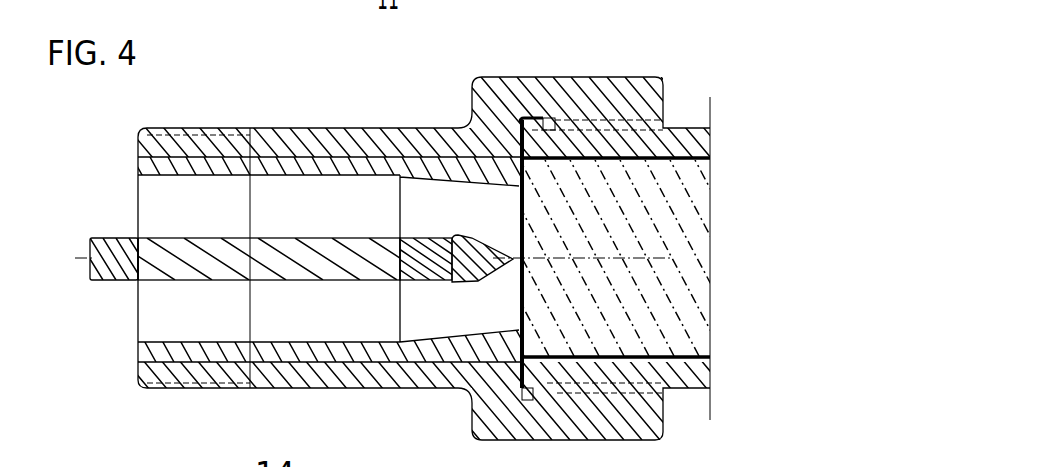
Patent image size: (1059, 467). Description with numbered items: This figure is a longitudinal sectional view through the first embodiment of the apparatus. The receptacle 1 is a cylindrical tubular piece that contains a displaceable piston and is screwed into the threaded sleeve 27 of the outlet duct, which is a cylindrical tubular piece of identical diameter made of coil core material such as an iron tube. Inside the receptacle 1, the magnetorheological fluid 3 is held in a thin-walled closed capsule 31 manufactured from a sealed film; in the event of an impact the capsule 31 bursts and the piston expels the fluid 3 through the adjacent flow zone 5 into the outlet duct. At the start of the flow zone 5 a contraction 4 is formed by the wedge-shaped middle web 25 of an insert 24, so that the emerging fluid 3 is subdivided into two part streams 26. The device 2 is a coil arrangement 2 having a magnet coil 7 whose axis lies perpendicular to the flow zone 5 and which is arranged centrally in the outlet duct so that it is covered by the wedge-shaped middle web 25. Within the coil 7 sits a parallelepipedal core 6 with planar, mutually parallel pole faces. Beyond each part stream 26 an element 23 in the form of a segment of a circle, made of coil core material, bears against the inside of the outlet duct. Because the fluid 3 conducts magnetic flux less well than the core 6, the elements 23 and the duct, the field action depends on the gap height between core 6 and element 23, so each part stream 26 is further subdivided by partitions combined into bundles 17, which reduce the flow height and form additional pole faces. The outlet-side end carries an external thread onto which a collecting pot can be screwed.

The receptacle 1 is at (620, 143).
The coil arrangement 2 is at (173, 247).
The magnetorheological fluid 3 is at (648, 307).
The contraction 4 is at (513, 207).
The flow zone 5 is at (278, 137).
The core 6 is at (138, 279).
The magnet coil 7 is at (105, 240).
The bundles 17 is at (327, 183).
The pole cap element 23 is at (180, 163).
The insert 24 is at (440, 157).
The wedge-shaped middle web 25 is at (485, 262).
The part stream 26 is at (447, 213).
The threaded sleeve 27 is at (653, 425).
The capsule 31 is at (685, 162).